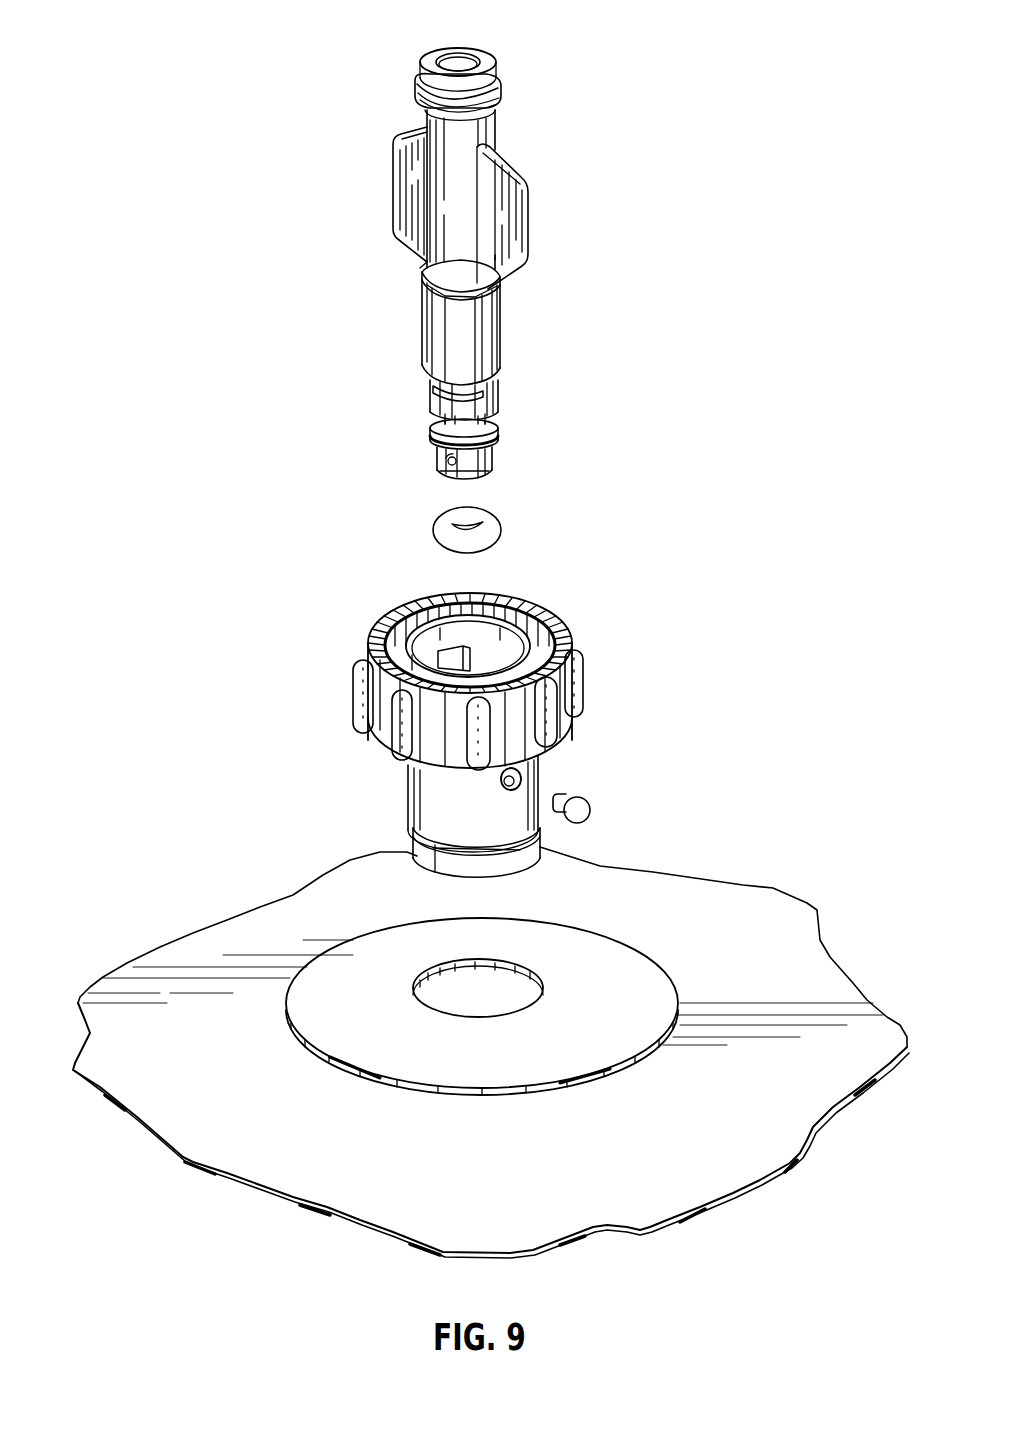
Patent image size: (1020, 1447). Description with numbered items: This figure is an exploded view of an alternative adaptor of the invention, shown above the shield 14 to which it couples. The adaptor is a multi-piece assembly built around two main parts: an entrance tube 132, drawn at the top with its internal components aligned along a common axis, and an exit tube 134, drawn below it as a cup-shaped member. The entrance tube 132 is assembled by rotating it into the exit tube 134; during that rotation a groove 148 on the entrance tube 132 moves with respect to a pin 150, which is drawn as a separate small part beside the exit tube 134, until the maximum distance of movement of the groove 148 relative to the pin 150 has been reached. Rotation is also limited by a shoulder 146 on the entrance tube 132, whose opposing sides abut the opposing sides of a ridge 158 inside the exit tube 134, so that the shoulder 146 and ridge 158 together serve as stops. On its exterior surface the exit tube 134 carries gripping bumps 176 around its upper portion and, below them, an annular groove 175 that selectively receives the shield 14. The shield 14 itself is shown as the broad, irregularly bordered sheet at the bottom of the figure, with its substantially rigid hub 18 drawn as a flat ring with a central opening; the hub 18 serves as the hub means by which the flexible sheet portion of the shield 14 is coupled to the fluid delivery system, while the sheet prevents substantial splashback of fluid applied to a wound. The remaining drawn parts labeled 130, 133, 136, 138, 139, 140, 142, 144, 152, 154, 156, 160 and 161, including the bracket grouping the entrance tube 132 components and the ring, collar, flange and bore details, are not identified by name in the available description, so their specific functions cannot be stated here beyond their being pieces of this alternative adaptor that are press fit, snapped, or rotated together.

The shield 14 is at (258, 1117).
The hub 18 is at (627, 990).
The valve assembly 130 is at (710, 863).
The entrance tube 132 is at (392, 357).
The lower body band 133 is at (490, 387).
The exit tube 134 is at (380, 798).
The top cap 136 is at (468, 50).
The lower cylindrical end 138 is at (440, 466).
The top opening 139 is at (450, 59).
The thread ring 140 is at (501, 90).
The wings 142 is at (527, 218).
The collar 144 is at (503, 294).
The shoulder 146 is at (437, 368).
The groove 148 is at (467, 399).
The pin 150 is at (585, 808).
The pin hole 152 is at (524, 778).
The flange 154 is at (493, 440).
The o-ring 156 is at (490, 527).
The ridge 158 is at (463, 643).
The bottom end 160 is at (481, 478).
The inner bore 161 is at (503, 645).
The groove 175 is at (452, 853).
The gripping bumps 176 is at (580, 693).